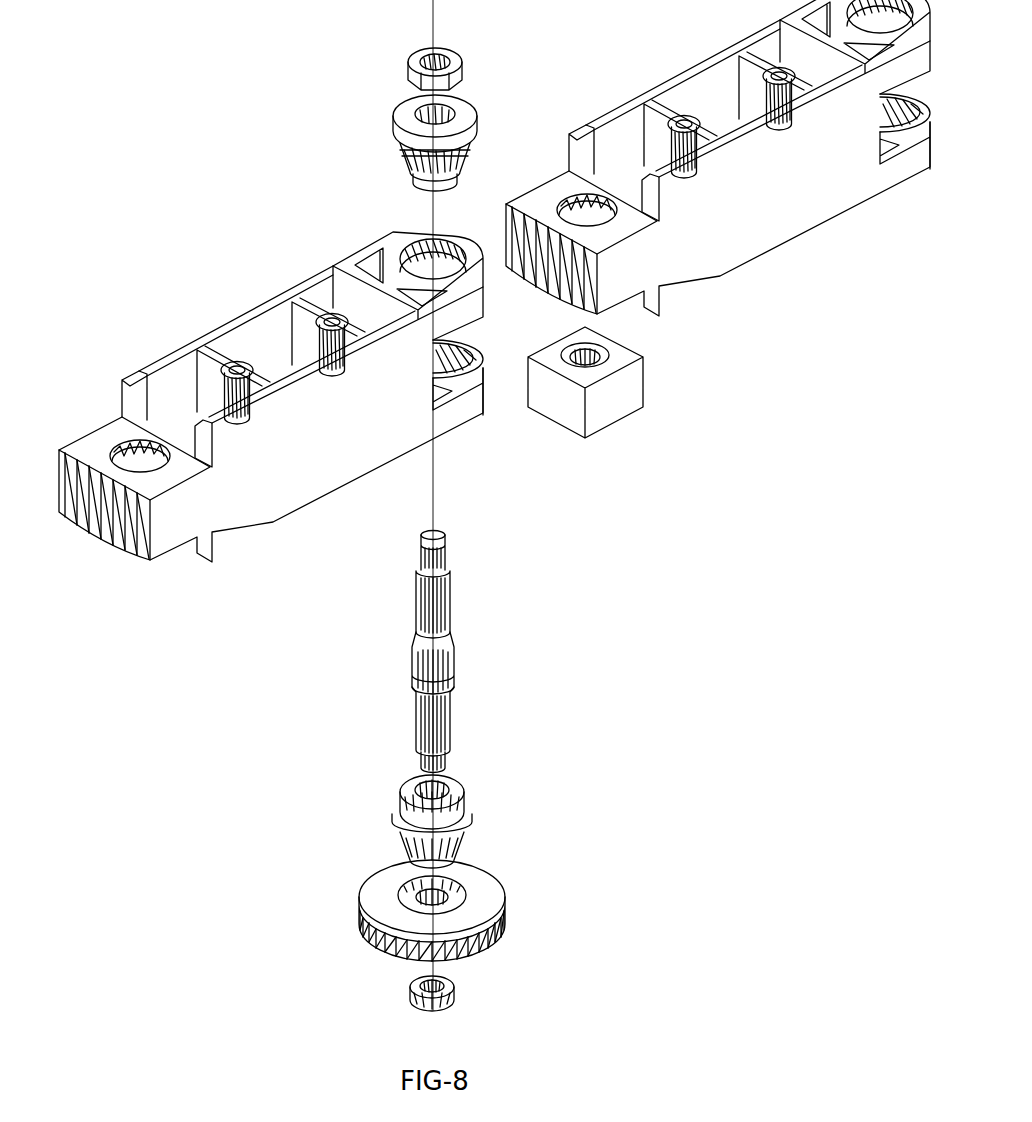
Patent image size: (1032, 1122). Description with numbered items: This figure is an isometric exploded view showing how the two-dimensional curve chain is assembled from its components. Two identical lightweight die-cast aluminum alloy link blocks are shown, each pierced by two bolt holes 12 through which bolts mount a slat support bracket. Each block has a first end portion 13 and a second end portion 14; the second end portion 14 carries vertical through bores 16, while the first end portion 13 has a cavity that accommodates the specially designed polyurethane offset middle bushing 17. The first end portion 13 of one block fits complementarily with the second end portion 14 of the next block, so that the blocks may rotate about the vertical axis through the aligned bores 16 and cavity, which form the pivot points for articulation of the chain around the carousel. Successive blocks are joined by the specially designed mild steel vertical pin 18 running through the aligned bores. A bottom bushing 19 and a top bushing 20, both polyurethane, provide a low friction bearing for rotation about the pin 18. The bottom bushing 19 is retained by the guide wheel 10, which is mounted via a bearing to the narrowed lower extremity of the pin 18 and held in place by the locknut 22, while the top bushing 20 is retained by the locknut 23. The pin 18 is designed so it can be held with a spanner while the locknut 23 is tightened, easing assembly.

The guide wheel 10 is at (516, 936).
The bolt holes 12 is at (699, 97).
The first end portion 13 is at (170, 521).
The second end portion 14 is at (465, 419).
The vertical through bores 16 is at (439, 236).
The offset middle bushing 17 is at (640, 400).
The vertical pin 18 is at (460, 671).
The bottom bushing 19 is at (480, 798).
The top bushing 20 is at (488, 110).
The locknut 22 is at (461, 1015).
The locknut 23 is at (475, 64).